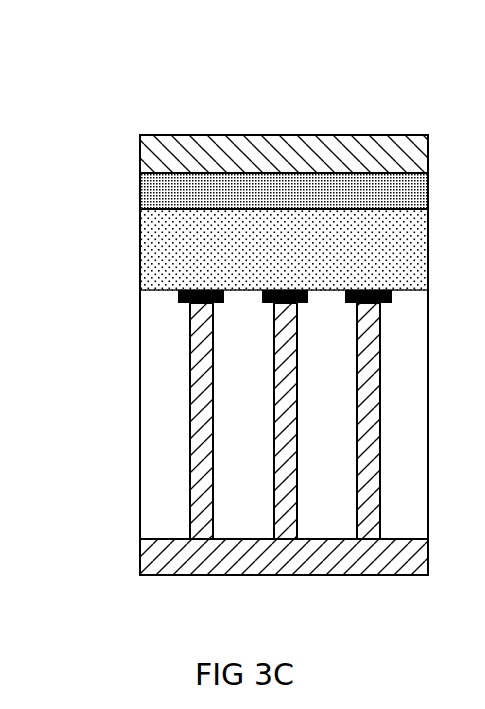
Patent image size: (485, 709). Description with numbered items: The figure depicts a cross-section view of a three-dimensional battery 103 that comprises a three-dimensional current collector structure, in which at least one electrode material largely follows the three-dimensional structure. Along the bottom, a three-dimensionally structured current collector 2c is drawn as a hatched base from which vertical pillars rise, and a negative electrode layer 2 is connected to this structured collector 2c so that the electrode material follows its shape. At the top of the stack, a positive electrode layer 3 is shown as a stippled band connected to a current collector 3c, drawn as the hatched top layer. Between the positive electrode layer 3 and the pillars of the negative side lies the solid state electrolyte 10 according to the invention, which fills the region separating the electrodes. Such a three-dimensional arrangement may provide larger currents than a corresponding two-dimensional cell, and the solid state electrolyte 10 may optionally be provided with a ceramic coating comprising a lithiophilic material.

The battery 103 is at (148, 98).
The positive electrode layer 3 is at (170, 187).
The current collector 3c is at (395, 162).
The solid state electrolyte 10 is at (140, 382).
The negative electrode layer 2 is at (140, 525).
The 3D structured current collector 2c is at (380, 557).